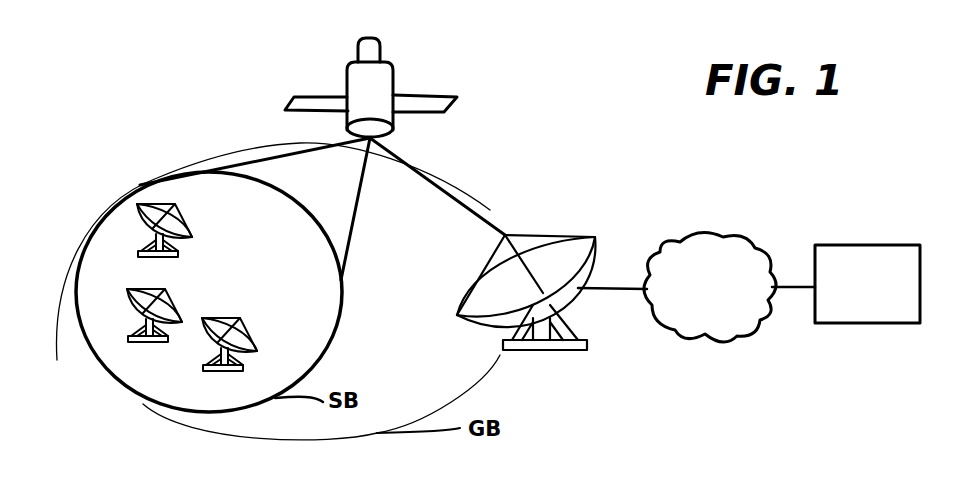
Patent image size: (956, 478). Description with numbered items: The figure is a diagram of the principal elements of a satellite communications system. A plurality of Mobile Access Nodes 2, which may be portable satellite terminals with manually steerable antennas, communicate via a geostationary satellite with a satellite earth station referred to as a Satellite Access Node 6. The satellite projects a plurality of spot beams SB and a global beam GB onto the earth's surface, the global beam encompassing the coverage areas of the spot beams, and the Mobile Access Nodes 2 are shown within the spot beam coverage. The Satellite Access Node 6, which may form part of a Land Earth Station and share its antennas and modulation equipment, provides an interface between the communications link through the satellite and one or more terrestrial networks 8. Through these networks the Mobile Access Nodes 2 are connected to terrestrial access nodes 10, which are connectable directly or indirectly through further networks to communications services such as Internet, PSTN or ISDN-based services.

The Mobile Access Nodes 2 is at (132, 236).
The Satellite Access Node 6 is at (535, 230).
The terrestrial networks 8 is at (713, 233).
The terrestrial access nodes 10 is at (828, 245).